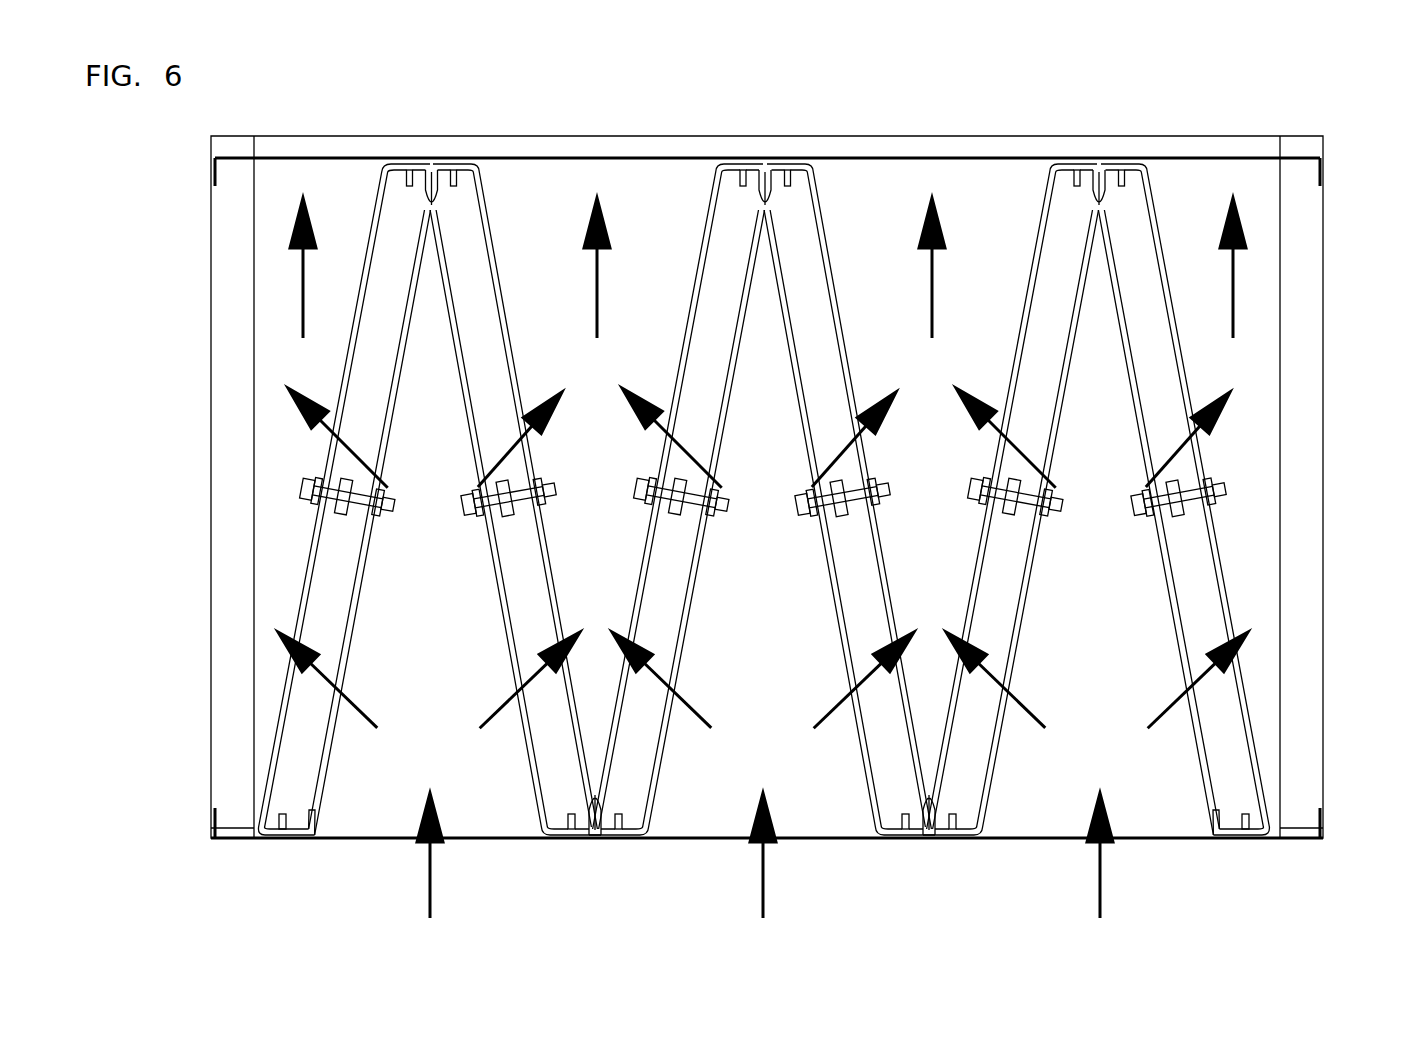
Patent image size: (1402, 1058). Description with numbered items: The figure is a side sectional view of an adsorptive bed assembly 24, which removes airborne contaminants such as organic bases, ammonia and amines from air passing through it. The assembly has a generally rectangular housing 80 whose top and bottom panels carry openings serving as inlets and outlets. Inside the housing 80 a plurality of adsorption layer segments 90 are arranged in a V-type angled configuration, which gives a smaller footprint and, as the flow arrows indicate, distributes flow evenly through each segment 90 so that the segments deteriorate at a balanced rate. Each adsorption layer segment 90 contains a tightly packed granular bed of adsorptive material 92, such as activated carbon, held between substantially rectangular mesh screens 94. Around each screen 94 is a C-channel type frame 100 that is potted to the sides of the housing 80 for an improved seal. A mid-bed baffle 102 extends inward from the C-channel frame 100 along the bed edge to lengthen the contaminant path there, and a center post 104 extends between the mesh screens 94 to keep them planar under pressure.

The adsorptive bed assembly 24 is at (1058, 112).
The housing 80 is at (1235, 146).
The adsorption layer segment 90 is at (769, 493).
The granular bed of adsorptive material 92 is at (1062, 275).
The mesh screen 94 is at (703, 240).
The C-channel type frame 100 is at (478, 170).
The mid-bed baffle 102 is at (385, 190).
The center post 104 is at (340, 484).